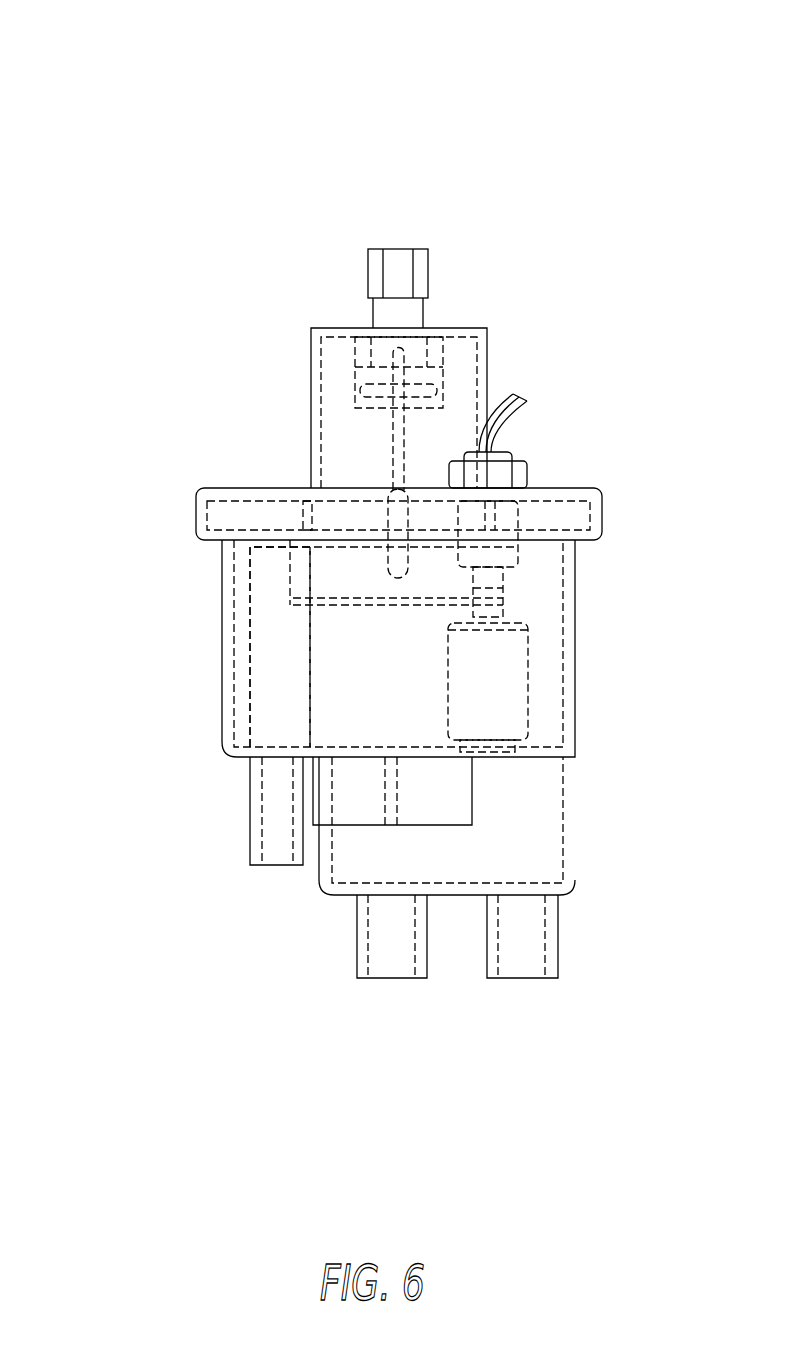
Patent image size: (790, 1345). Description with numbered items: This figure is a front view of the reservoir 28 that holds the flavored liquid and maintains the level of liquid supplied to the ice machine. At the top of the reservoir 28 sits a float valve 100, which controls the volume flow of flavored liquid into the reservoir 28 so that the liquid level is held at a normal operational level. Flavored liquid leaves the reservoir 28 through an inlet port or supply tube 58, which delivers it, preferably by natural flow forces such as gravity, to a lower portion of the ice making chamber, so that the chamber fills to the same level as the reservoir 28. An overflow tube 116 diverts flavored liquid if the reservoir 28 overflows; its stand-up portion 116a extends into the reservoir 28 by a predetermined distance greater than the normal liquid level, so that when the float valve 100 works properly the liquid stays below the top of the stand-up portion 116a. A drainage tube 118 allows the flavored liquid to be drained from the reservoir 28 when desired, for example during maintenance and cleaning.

The reservoir 28 is at (549, 170).
The float valve 100 is at (367, 268).
The overflow tube 116 is at (250, 803).
The stand-up portion 116a is at (270, 675).
The supply tube 58 is at (427, 923).
The drainage tube 118 is at (558, 923).